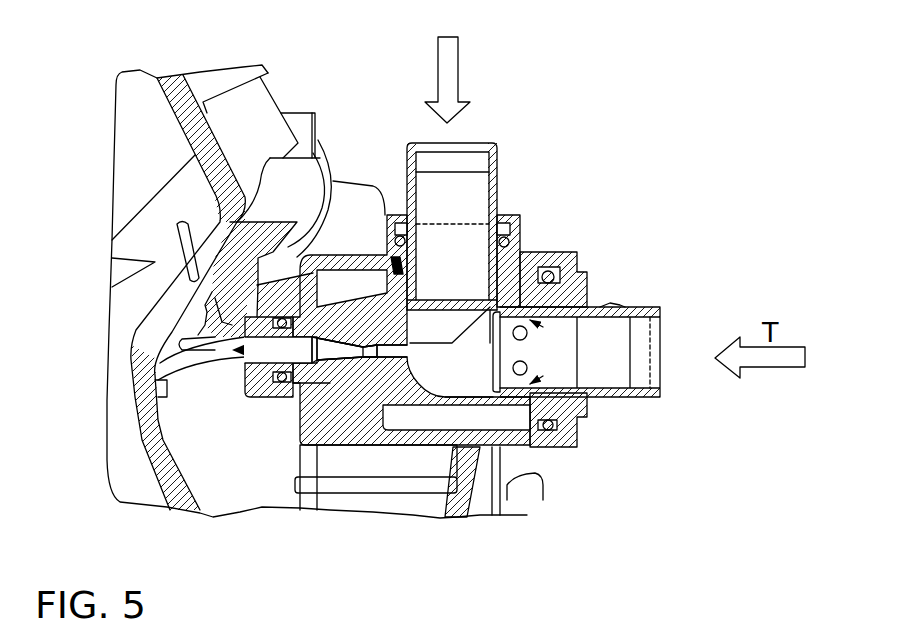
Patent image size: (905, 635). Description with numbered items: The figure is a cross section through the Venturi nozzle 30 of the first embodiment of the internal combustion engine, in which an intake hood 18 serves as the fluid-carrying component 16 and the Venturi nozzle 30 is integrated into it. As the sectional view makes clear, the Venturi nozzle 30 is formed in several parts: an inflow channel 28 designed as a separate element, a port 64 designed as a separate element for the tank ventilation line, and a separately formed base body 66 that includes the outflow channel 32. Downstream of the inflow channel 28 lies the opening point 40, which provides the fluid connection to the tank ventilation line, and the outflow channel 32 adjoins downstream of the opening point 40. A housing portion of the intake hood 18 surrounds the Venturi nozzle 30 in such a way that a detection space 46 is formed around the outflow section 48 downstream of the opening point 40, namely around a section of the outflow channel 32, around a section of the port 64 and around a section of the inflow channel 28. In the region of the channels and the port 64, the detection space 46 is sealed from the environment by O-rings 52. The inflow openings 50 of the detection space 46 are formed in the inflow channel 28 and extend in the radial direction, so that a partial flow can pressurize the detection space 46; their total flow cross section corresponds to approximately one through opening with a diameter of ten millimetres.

The fluid-carrying component 16 is at (317, 271).
The intake hood 18 is at (252, 105).
The inflow channel 28 is at (613, 386).
The Venturi nozzle 30 is at (602, 212).
The outflow channel 32 is at (322, 354).
The opening point 40 is at (395, 265).
The detection space 46 is at (348, 298).
The outflow section 48 is at (370, 374).
The inflow openings 50 is at (532, 335).
The O-rings 52 is at (548, 270).
The port 64 is at (496, 181).
The base body 66 is at (567, 281).